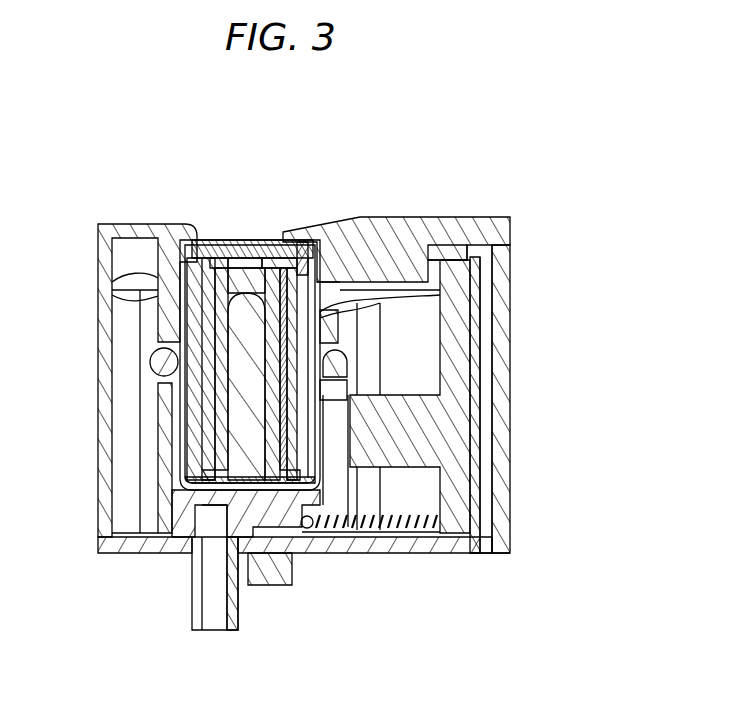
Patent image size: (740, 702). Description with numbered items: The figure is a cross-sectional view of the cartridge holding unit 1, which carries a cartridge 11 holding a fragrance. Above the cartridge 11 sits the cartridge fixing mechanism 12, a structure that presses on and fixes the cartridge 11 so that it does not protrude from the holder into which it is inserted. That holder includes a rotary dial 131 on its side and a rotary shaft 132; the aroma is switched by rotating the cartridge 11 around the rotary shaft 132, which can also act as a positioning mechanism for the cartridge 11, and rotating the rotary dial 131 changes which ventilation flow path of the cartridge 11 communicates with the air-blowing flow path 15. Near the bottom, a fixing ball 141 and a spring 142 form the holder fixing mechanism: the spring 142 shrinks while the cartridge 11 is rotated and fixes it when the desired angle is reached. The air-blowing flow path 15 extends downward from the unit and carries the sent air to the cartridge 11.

The cartridge holding unit 1 is at (503, 163).
The cartridge 11 is at (245, 241).
The cartridge fixing mechanism 12 is at (387, 231).
The rotary dial 131 is at (153, 365).
The rotary shaft 132 is at (298, 252).
The fixing ball 141 is at (307, 529).
The spring 142 is at (412, 529).
The air-blowing flow path 15 is at (192, 600).